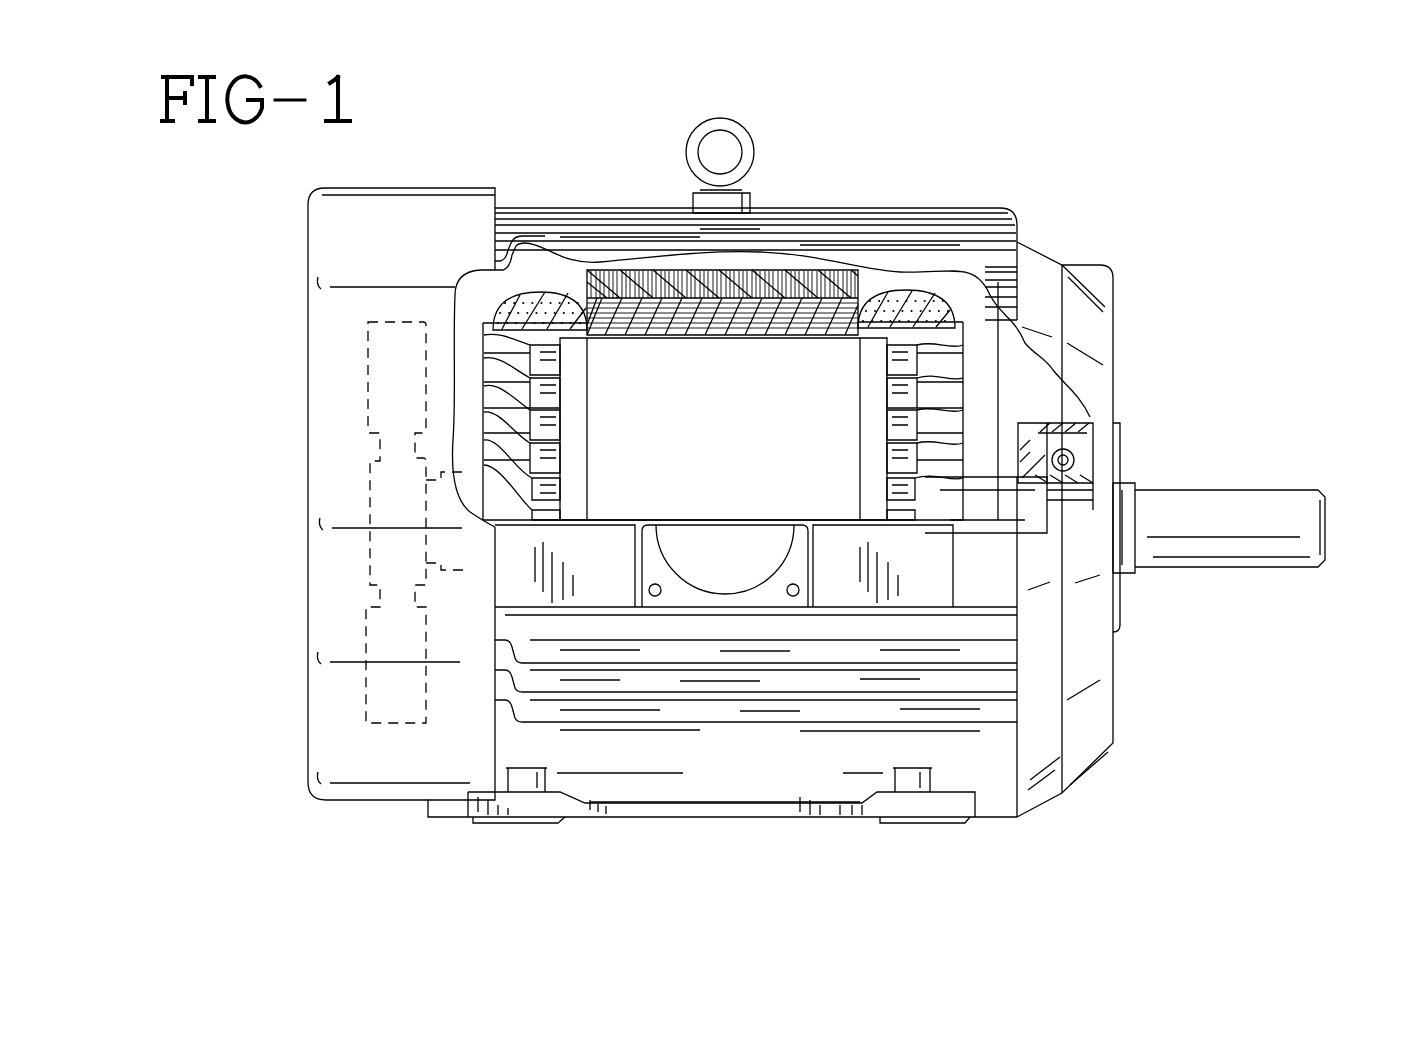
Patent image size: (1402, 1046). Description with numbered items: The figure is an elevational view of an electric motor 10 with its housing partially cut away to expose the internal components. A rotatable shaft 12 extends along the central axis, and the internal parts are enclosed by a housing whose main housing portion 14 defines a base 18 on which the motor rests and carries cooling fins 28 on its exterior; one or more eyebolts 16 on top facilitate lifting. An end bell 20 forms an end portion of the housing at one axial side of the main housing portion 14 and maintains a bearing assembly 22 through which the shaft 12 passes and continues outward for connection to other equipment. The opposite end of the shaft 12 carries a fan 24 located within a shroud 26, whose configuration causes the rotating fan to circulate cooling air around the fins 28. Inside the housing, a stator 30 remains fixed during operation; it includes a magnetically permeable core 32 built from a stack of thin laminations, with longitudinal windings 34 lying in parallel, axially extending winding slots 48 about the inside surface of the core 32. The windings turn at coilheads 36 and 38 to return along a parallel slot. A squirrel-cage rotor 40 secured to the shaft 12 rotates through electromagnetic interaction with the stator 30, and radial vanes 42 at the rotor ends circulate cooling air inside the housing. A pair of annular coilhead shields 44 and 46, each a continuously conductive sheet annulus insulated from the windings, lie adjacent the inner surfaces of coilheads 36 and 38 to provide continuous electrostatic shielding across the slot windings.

The electric motor 10 is at (1068, 188).
The rotatable shaft 12 is at (1235, 488).
The main housing portion 14 is at (762, 765).
The eyebolt 16 is at (755, 130).
The base 18 is at (520, 805).
The end bell 20 is at (1095, 695).
The bearing assembly 22 is at (1067, 493).
The fan 24 is at (364, 388).
The shroud 26 is at (397, 188).
The cooling fins 28 is at (898, 222).
The stator 30 is at (518, 258).
The magnetically permeable core 32 is at (880, 252).
The longitudinal windings 34 is at (633, 267).
The coilhead 36 is at (990, 387).
The coilhead 38 is at (495, 310).
The rotor 40 is at (617, 500).
The radial vanes 42 is at (912, 410).
The coilhead shield 44 is at (948, 372).
The coilhead shield 46 is at (500, 365).
The winding slots 48 is at (487, 423).